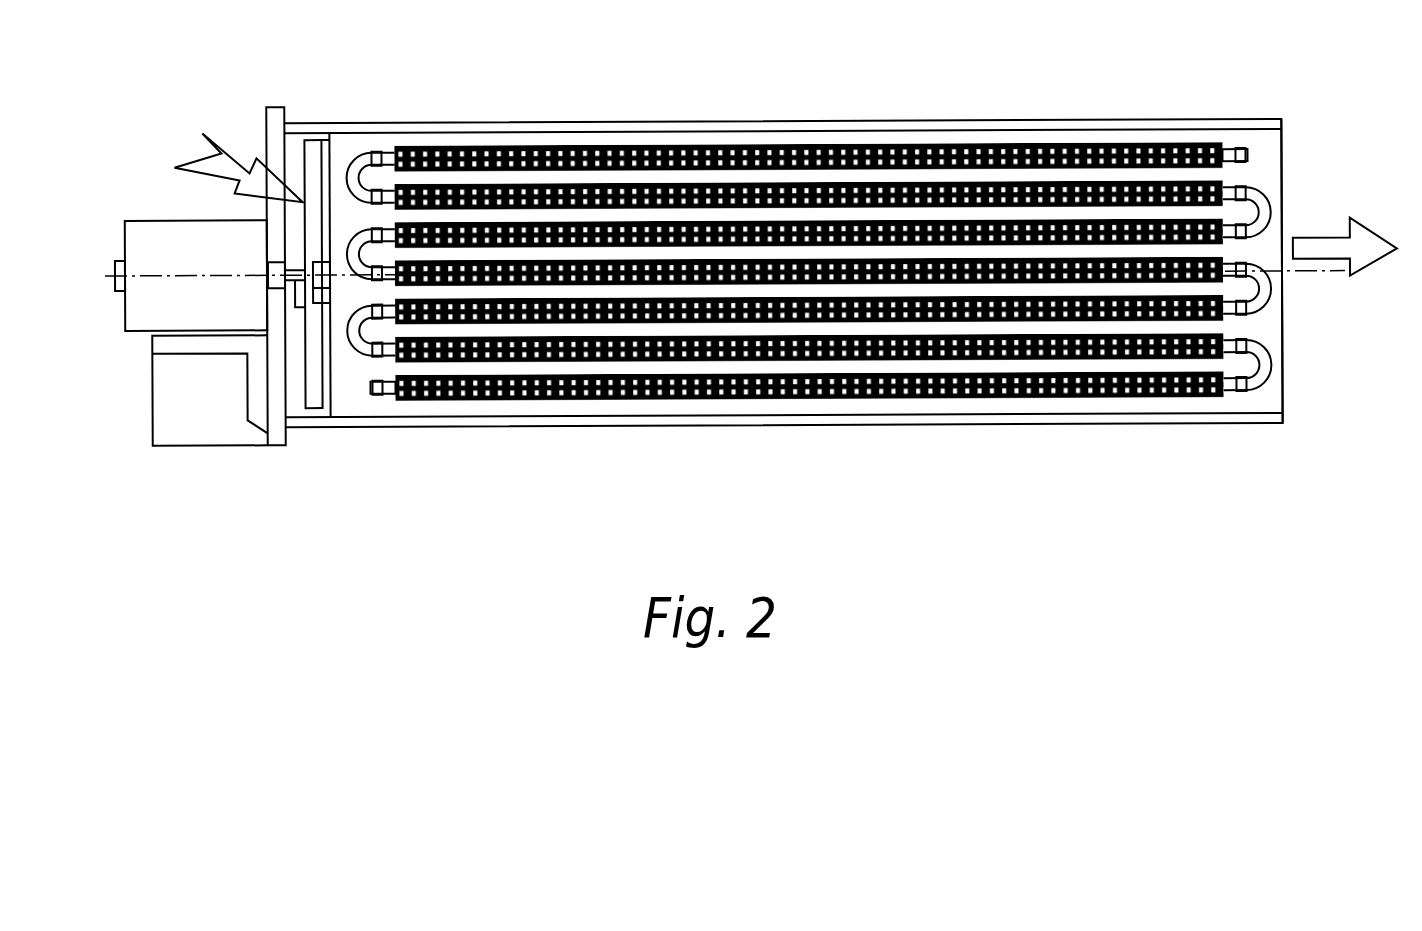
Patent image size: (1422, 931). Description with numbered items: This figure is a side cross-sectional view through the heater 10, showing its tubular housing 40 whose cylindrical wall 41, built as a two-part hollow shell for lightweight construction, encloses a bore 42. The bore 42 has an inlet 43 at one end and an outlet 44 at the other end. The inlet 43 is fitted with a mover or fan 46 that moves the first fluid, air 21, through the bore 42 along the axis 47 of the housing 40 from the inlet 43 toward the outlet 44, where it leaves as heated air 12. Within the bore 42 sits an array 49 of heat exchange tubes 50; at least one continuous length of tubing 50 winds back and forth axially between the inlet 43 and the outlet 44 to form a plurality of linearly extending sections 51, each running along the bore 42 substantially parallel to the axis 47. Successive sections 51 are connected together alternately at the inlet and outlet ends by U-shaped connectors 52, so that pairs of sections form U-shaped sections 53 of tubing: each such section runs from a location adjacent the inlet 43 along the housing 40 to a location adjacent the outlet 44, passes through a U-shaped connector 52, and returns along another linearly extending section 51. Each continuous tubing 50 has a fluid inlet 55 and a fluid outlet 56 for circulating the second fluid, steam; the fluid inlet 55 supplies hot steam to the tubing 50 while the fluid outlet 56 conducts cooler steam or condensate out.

The heater 10 is at (450, 548).
The heated air 12 is at (1320, 250).
The air 21 is at (218, 140).
The tubular housing 40 is at (462, 122).
The cylindrical wall 41 is at (948, 120).
The bore 42 is at (352, 390).
The inlet 43 is at (265, 125).
The outlet 44 is at (1268, 155).
The fan 46 is at (333, 137).
The axis 47 is at (153, 277).
The array of heat exchange tubes 49 is at (697, 95).
The heat exchange tubing 50 is at (614, 148).
The linearly extending section 51 is at (855, 187).
The U-shaped connector 52 is at (1267, 300).
The U-shaped section 53 is at (1057, 222).
The fluid inlet 55 is at (368, 390).
The fluid outlet 56 is at (1250, 158).